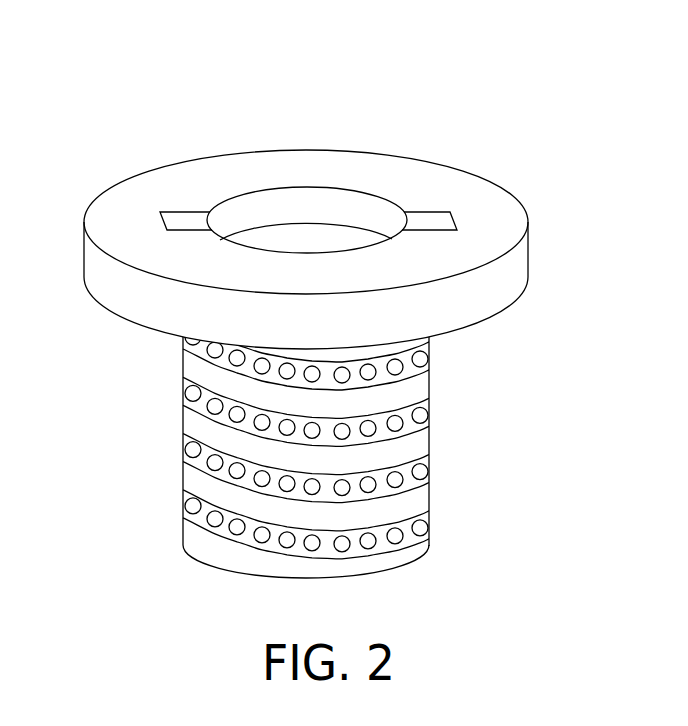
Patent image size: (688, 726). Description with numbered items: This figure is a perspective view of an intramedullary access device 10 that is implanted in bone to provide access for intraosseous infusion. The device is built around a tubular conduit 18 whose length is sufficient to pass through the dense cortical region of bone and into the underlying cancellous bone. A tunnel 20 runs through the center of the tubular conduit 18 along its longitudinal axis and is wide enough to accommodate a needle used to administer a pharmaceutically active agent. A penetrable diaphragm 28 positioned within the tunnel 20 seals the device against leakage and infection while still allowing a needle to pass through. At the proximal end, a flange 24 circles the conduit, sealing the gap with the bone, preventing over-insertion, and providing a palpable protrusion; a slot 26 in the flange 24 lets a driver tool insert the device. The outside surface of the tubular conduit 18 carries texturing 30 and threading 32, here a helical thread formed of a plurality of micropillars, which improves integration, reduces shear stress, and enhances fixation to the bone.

The intramedullary access device 10 is at (113, 150).
The tubular conduit 18 is at (428, 436).
The tunnel 20 is at (347, 205).
The flange 24 is at (475, 203).
The slot 26 is at (183, 222).
The penetrable diaphragm 28 is at (297, 235).
The texturing 30 is at (427, 527).
The threading 32 is at (413, 538).